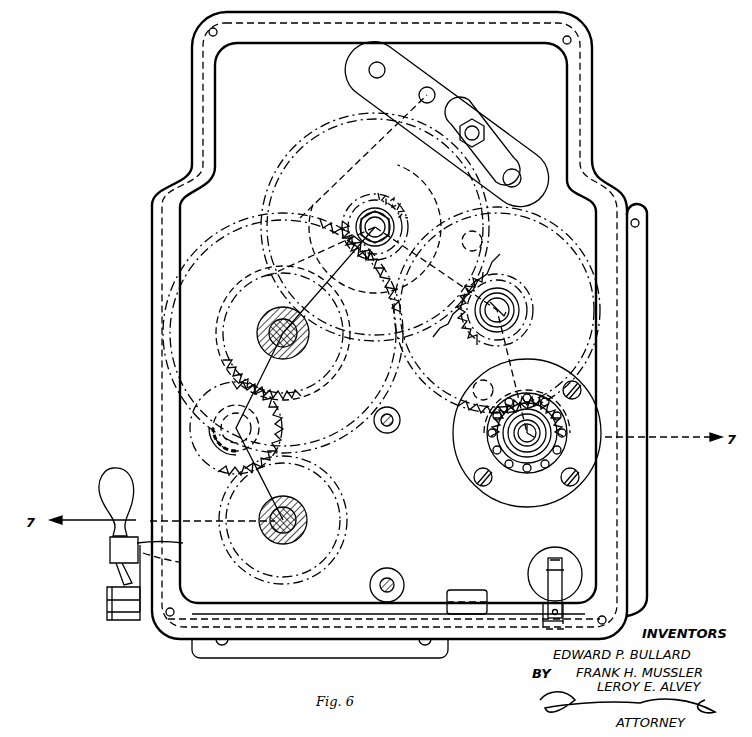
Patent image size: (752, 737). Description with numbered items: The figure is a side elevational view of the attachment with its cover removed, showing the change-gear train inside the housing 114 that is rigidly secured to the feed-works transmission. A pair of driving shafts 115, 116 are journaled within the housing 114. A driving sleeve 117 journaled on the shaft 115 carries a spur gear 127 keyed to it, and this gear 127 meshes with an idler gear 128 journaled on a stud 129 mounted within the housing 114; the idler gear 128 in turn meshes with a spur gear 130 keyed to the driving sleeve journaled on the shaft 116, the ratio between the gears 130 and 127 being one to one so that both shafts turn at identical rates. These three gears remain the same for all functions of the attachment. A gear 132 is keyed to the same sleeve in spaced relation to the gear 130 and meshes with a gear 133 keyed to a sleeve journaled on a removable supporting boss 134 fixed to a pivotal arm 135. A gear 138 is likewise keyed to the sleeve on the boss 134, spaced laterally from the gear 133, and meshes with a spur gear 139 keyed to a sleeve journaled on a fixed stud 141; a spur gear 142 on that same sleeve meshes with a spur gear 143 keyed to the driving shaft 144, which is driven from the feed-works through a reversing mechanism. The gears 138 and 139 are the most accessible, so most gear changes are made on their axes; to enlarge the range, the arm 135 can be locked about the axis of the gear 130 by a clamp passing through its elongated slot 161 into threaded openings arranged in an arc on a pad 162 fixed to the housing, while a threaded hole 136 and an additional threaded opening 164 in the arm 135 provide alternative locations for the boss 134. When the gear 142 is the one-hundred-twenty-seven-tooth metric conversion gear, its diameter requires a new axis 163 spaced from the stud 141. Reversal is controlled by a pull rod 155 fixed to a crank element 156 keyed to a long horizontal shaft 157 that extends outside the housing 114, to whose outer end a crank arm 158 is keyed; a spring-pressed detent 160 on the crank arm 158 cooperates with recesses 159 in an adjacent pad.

The housing 114 is at (593, 118).
The driving shaft 115 is at (288, 545).
The driving shaft 116 is at (303, 347).
The driving sleeve 117 is at (302, 530).
The spur gear 127 is at (235, 475).
The idler gear 128 is at (219, 468).
The stud 129 is at (278, 430).
The spur gear 130 is at (233, 364).
The gear 132 is at (393, 295).
The gear 133 is at (395, 273).
The removable supporting boss 134 is at (374, 214).
The arm 135 is at (494, 128).
The threaded hole 136 is at (402, 208).
The gear 138 is at (445, 323).
The spur gear 139 is at (466, 322).
The fixed stud 141 is at (513, 317).
The spur gear 142 is at (498, 411).
The spur gear 143 is at (500, 441).
The driving shaft 144 is at (545, 441).
The pull rod 155 is at (558, 560).
The crank element 156 is at (548, 600).
The shaft 157 is at (421, 610).
The crank arm 158 is at (106, 503).
The recesses 159 is at (180, 560).
The spring pressed detent 160 is at (183, 543).
The elongated slot 161 is at (516, 162).
The pad 162 is at (453, 95).
The axis 163 is at (484, 243).
The threaded opening 164 is at (340, 209).